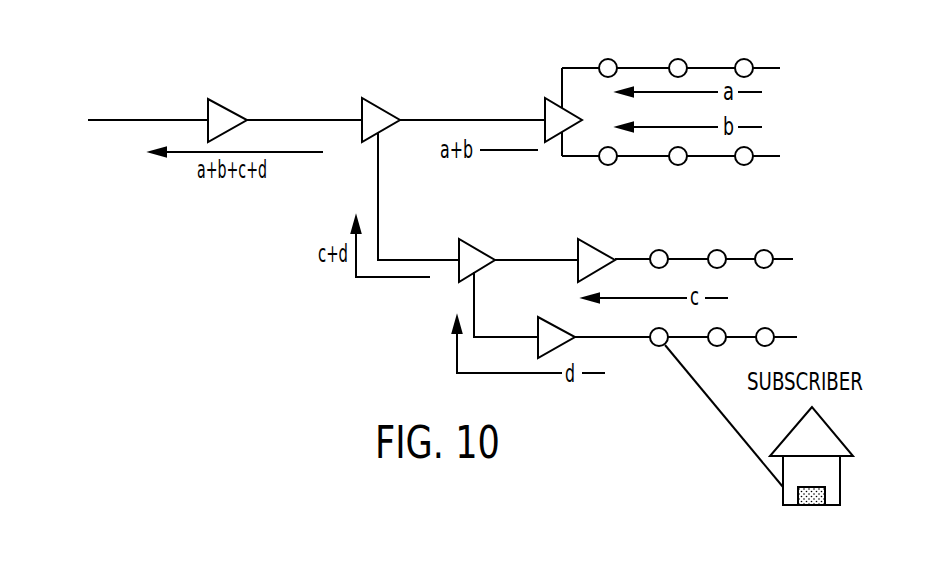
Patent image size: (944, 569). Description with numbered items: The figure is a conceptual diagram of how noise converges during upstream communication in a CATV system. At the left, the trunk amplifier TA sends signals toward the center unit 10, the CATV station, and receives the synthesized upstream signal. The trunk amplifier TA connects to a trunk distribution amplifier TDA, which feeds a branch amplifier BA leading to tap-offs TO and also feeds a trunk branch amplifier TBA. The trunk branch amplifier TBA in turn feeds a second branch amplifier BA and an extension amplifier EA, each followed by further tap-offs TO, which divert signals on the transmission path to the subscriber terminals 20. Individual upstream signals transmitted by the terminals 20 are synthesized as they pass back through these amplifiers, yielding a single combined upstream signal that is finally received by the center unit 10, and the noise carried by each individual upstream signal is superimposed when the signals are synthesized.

The center unit 10 is at (202, 101).
The terminals 20 is at (813, 505).
The trunk amplifier TA is at (227, 101).
The trunk distribution amplifier TDA is at (378, 100).
The branch amplifier BA is at (564, 170).
The trunk branch amplifier TBA is at (478, 244).
The extension amplifier EA is at (556, 320).
The tap-off TO is at (670, 92).